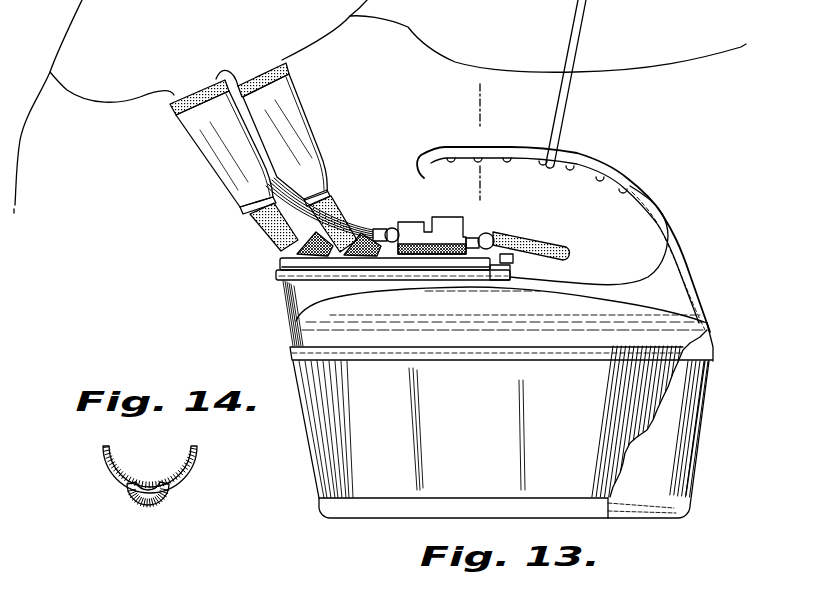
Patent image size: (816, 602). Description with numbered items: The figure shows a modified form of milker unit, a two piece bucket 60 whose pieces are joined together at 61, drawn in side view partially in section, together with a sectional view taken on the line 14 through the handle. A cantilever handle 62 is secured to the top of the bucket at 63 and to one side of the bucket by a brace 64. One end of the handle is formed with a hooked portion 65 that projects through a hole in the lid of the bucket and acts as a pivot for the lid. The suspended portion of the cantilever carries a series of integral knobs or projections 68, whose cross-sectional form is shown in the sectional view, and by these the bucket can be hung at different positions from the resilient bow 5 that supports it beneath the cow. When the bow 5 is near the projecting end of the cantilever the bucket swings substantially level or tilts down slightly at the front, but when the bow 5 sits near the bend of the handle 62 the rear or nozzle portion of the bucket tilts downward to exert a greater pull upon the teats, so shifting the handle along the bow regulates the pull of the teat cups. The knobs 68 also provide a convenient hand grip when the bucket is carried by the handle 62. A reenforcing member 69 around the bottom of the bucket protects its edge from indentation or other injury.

In FIG. 13, the bow 5 is at (582, 29).
In FIG. 13, the section line 14— 14 is at (490, 142).
In FIG. 13, the two piece bucket 60 is at (350, 397).
In FIG. 13, the joint of the bucket 61 is at (713, 361).
In FIG. 13, the cantilever handle 62 is at (610, 170).
In FIG. 14, the cantilever handle 62 is at (113, 467).
In FIG. 13, the securing point of handle to bucket top 63 is at (583, 278).
In FIG. 13, the brace 64 is at (695, 275).
In FIG. 13, the hooked portion 65 is at (523, 248).
In FIG. 13, the knobs or projections 68 is at (505, 157).
In FIG. 14, the knobs or projections 68 is at (163, 507).
In FIG. 13, the reenforcing member 69 is at (678, 518).